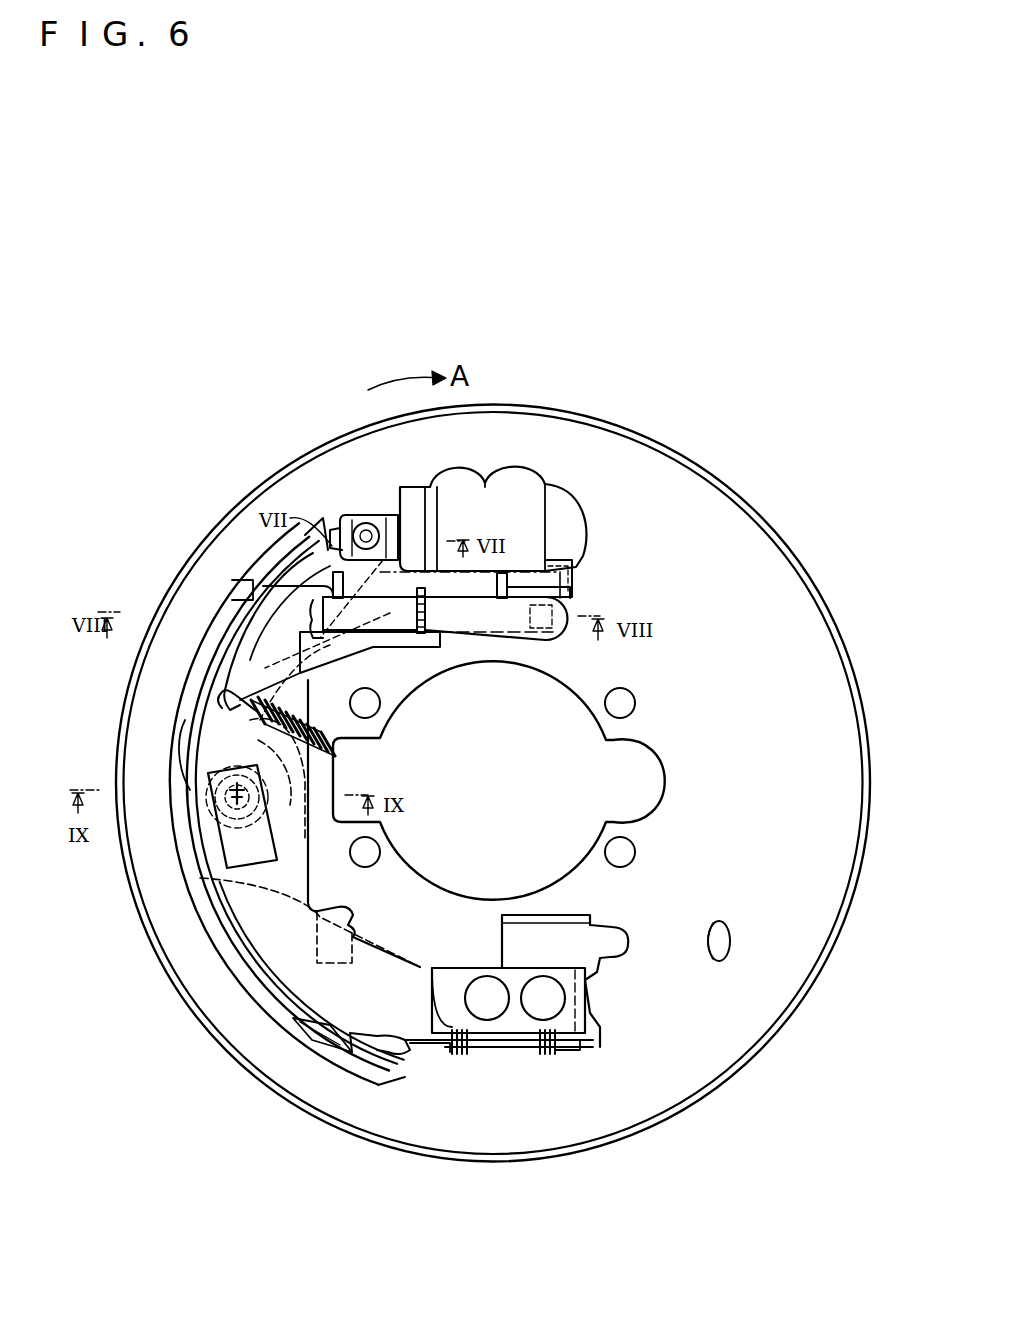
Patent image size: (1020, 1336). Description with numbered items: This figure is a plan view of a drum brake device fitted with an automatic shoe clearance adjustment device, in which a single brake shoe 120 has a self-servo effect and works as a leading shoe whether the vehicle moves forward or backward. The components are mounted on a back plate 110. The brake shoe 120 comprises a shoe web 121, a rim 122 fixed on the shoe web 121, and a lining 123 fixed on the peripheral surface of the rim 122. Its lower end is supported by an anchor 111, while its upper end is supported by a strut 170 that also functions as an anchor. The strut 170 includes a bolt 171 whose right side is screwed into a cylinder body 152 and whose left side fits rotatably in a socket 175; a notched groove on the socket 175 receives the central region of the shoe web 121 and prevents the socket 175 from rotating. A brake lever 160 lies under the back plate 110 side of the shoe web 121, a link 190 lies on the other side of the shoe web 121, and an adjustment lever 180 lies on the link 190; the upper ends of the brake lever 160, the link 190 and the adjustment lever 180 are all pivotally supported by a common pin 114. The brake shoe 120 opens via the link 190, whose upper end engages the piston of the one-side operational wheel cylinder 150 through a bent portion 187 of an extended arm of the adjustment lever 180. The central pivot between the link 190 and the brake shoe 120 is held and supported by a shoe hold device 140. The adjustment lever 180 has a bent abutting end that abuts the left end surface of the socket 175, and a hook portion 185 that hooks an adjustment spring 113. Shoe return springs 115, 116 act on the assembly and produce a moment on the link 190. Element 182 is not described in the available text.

The back plate 110 is at (824, 592).
The anchor 111 is at (512, 1025).
The adjustment spring 113 is at (237, 728).
The common pin 114 is at (352, 518).
The shoe return spring 115 is at (512, 588).
The shoe return spring 116 is at (546, 1052).
The brake shoe 120 is at (230, 801).
The shoe web 121 is at (210, 892).
The rim 122 is at (197, 915).
The lining 123 is at (193, 1002).
The shoe hold device 140 is at (228, 800).
The wheel cylinder 150 is at (483, 482).
The cylinder body 152 is at (576, 582).
The brake lever 160 is at (338, 896).
The strut 170 is at (467, 648).
The bolt 171 is at (521, 642).
The socket 175 is at (394, 622).
The adjustment lever 180 is at (322, 672).
The lever arm 182 is at (383, 648).
The hook portion 185 is at (236, 688).
The bent portion 187 is at (368, 526).
The link 190 is at (280, 964).